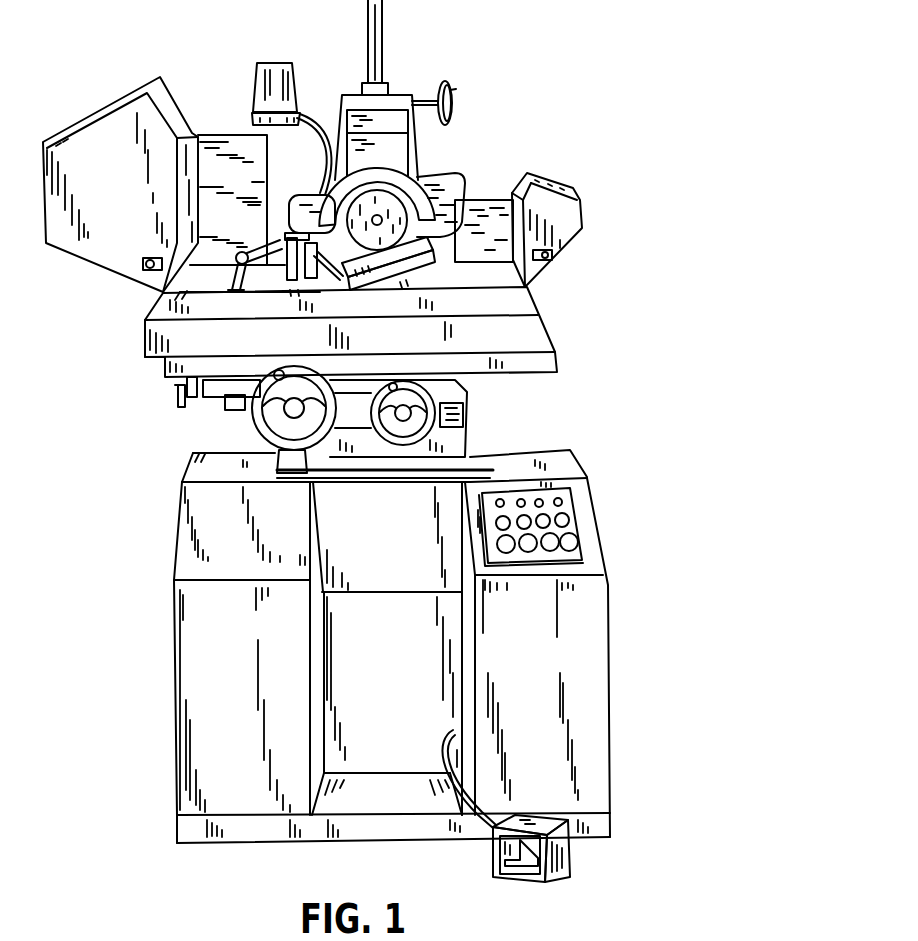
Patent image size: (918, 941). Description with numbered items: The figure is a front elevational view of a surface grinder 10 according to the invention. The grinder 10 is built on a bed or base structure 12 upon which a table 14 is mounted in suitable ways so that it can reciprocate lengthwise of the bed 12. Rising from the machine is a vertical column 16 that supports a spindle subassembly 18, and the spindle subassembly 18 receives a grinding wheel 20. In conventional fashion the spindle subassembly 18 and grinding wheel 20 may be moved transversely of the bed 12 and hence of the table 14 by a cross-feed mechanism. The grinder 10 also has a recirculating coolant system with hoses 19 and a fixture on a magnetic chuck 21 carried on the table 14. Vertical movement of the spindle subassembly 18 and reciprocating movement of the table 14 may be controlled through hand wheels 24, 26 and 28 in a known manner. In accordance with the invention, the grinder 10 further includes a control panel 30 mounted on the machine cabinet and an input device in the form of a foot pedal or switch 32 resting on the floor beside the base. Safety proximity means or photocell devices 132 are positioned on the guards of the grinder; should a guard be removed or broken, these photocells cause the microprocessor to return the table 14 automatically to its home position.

The surface grinder 10 is at (567, 66).
The bed or base structure 12 is at (558, 336).
The table 14 is at (132, 305).
The vertical column 16 is at (404, 69).
The spindle subassembly 18 is at (423, 177).
The hoses 19 is at (320, 262).
The grinding wheel 20 is at (422, 239).
The magnetic chuck 21 is at (301, 95).
The hand wheel 24 is at (427, 427).
The hand wheel 26 is at (256, 407).
The hand wheel 28 is at (453, 86).
The control panel 30 is at (581, 496).
The foot pedal or switch 32 is at (577, 857).
The safety proximity means or photocell devices 132 is at (554, 252).